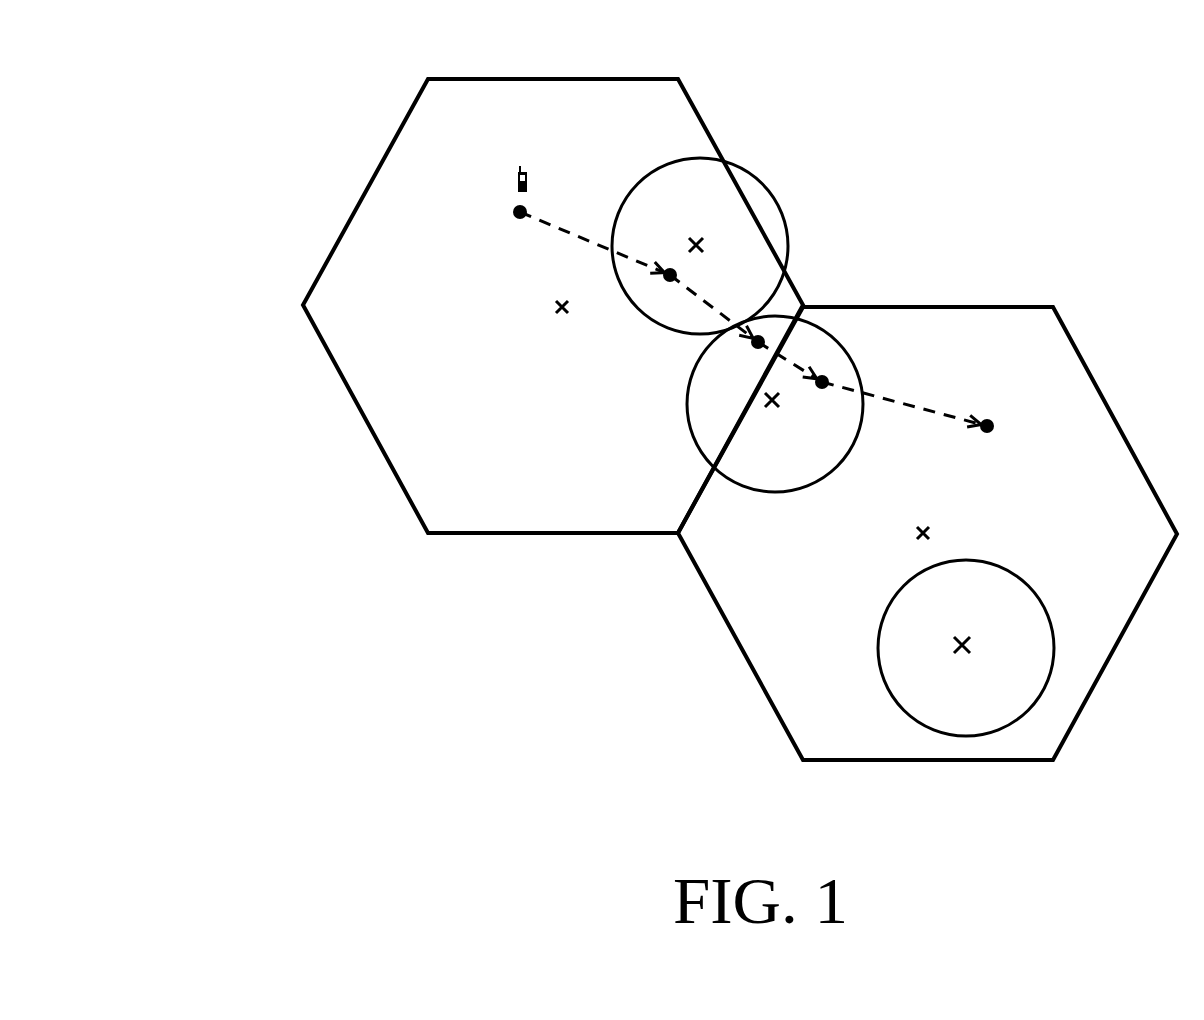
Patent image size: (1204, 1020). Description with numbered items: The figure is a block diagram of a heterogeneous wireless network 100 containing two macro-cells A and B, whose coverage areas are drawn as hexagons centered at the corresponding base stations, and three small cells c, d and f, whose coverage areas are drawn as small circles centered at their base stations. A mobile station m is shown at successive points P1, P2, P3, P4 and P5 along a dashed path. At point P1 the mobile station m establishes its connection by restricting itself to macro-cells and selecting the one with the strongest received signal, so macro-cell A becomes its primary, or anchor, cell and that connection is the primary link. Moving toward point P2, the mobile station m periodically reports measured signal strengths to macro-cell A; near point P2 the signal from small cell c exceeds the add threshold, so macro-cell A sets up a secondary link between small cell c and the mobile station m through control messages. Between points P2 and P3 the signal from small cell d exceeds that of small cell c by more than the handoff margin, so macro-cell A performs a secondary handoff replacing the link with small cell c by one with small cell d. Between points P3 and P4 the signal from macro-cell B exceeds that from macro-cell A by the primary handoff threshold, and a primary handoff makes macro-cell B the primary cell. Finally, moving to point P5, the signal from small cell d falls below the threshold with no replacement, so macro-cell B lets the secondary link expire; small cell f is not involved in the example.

The wireless network 100 is at (289, 67).
The mobile station m is at (526, 162).
The macro-cell A is at (560, 323).
The macro-cell B is at (926, 516).
The small cell c is at (700, 246).
The small cell d is at (775, 404).
The small cell f is at (966, 648).
The point P1 is at (513, 227).
The point P2 is at (668, 290).
The point P3 is at (747, 352).
The point P4 is at (827, 397).
The point P5 is at (993, 441).